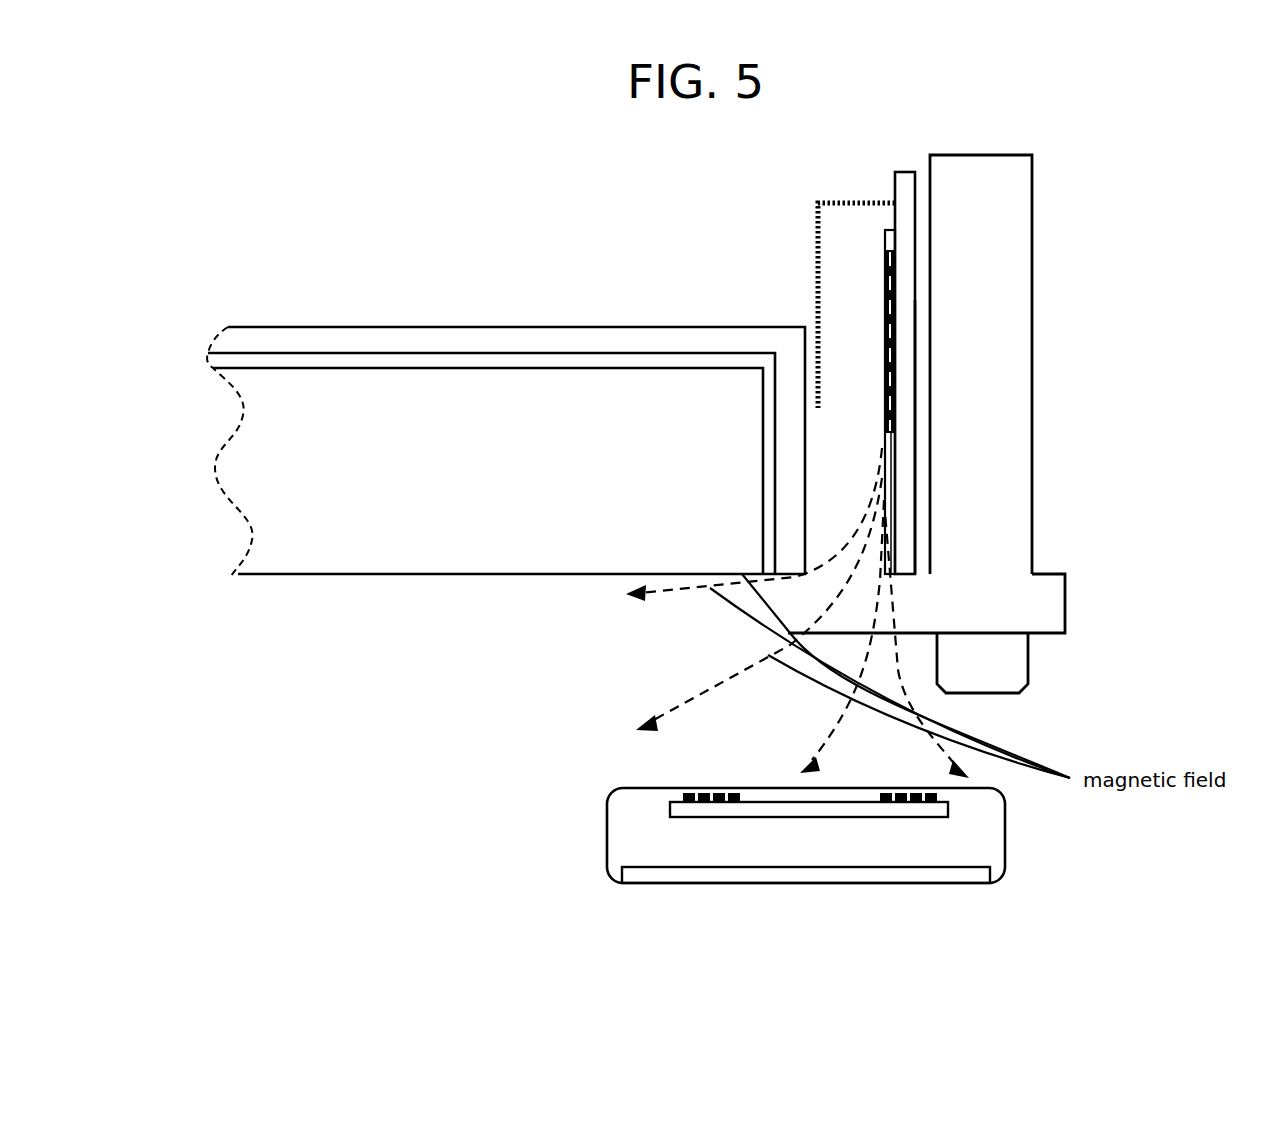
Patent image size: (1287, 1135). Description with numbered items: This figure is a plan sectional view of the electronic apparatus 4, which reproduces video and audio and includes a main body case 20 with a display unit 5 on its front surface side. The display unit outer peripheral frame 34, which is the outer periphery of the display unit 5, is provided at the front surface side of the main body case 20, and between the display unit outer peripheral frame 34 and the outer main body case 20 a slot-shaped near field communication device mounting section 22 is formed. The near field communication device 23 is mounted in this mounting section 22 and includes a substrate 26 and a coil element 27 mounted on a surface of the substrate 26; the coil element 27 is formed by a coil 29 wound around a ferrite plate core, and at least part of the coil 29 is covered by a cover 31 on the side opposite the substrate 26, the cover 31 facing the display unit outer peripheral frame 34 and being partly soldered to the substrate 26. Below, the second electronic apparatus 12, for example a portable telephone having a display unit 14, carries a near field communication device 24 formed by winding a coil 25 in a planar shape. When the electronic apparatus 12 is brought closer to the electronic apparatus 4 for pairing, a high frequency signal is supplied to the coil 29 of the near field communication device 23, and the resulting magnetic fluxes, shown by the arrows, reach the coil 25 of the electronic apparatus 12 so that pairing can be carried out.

The electronic apparatus 4 is at (983, 610).
The display unit 5 is at (242, 477).
The electronic apparatus 12 is at (604, 845).
The display unit 14 is at (812, 878).
The main body case 20 is at (1065, 605).
The near field communication device mounting section 22 is at (833, 418).
The near field communication device 23 is at (905, 187).
The near field communication device 24 is at (673, 806).
The coil 25 is at (727, 783).
The substrate 26 is at (905, 398).
The coil element 27 is at (895, 228).
The coil 29 is at (895, 292).
The cover 31 is at (817, 267).
The display unit outer peripheral frame 34 is at (385, 343).